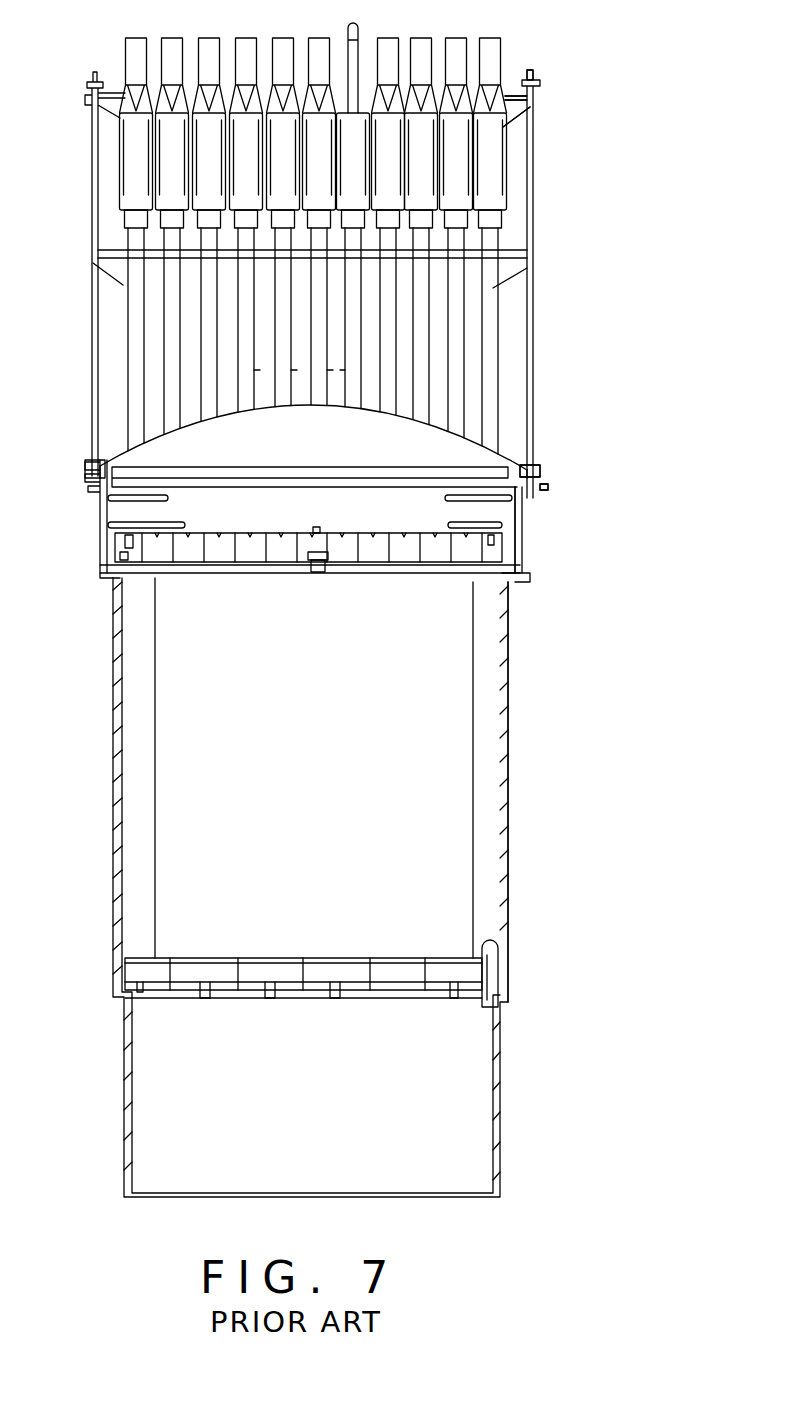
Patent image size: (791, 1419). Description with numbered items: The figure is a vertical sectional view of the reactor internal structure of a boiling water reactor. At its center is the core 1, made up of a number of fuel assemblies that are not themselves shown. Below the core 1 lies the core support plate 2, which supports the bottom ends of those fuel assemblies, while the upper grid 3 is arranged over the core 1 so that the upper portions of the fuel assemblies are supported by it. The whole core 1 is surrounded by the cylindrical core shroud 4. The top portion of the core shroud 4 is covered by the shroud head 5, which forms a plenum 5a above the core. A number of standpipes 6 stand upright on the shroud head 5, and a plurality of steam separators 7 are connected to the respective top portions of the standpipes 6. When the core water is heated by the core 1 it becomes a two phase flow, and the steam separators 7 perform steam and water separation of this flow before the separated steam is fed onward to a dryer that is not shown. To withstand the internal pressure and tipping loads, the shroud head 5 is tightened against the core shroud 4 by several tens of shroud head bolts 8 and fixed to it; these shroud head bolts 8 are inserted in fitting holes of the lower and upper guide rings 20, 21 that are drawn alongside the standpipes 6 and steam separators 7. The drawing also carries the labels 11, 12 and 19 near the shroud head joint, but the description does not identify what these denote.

The core 1 is at (457, 725).
The core support plate 2 is at (450, 958).
The upper grid 3 is at (445, 557).
The core shroud 4 is at (507, 802).
The shroud head 5 is at (503, 450).
The plenum 5a is at (333, 455).
The standpipes 6 is at (468, 337).
The steam separators 7 is at (455, 157).
The shroud head bolts 8 is at (535, 290).
The bracket 11 is at (530, 495).
The bolt 12 is at (548, 487).
The nut 19 is at (545, 470).
The lower guide ring 20 is at (510, 250).
The upper guide ring 21 is at (513, 92).